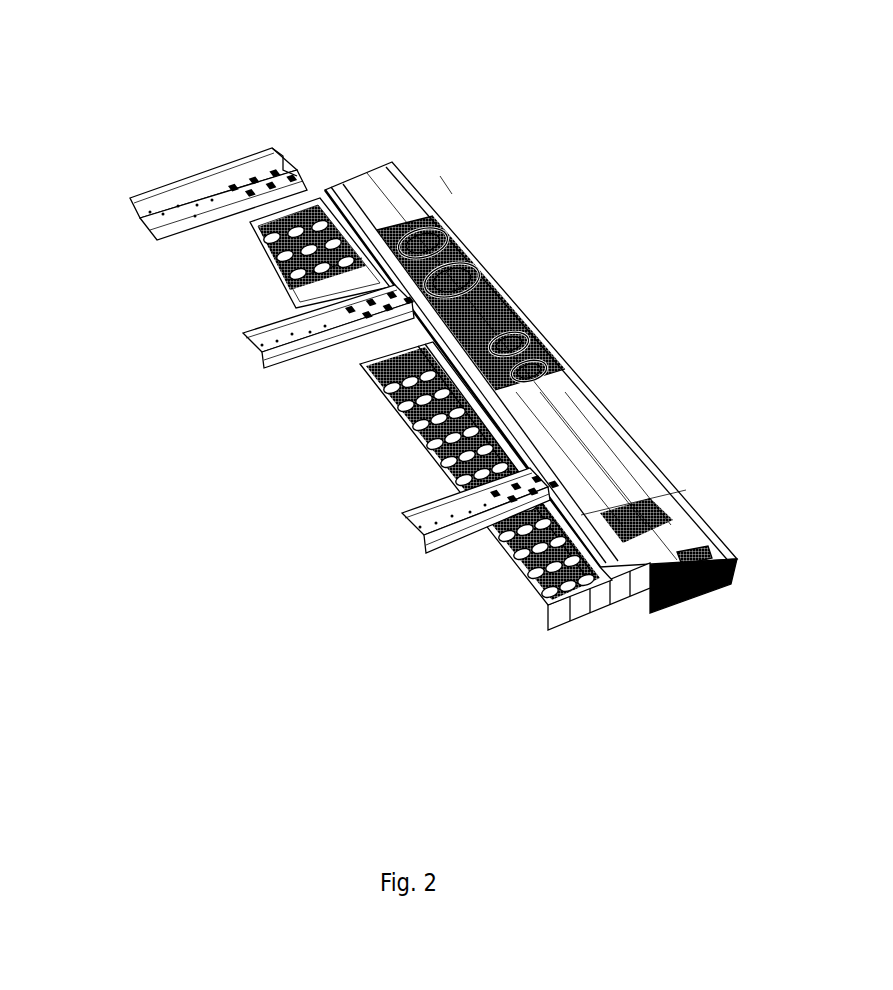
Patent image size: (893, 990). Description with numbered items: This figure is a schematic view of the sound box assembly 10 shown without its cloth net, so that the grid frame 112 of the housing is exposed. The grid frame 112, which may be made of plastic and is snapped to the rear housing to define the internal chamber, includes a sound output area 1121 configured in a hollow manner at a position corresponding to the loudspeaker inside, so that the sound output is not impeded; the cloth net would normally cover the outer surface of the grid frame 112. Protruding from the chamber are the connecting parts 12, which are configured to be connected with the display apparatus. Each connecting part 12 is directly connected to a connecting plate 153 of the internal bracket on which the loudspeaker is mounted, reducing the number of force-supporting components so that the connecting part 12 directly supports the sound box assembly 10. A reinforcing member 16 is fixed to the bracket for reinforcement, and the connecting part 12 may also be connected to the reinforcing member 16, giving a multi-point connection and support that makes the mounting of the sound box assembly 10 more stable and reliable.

The sound box assembly 10 is at (151, 43).
The connecting part 12 is at (145, 213).
The grid frame 112 is at (397, 190).
The sound output area 1121 is at (478, 292).
The connecting plate 153 is at (258, 234).
The reinforcing member 16 is at (640, 558).